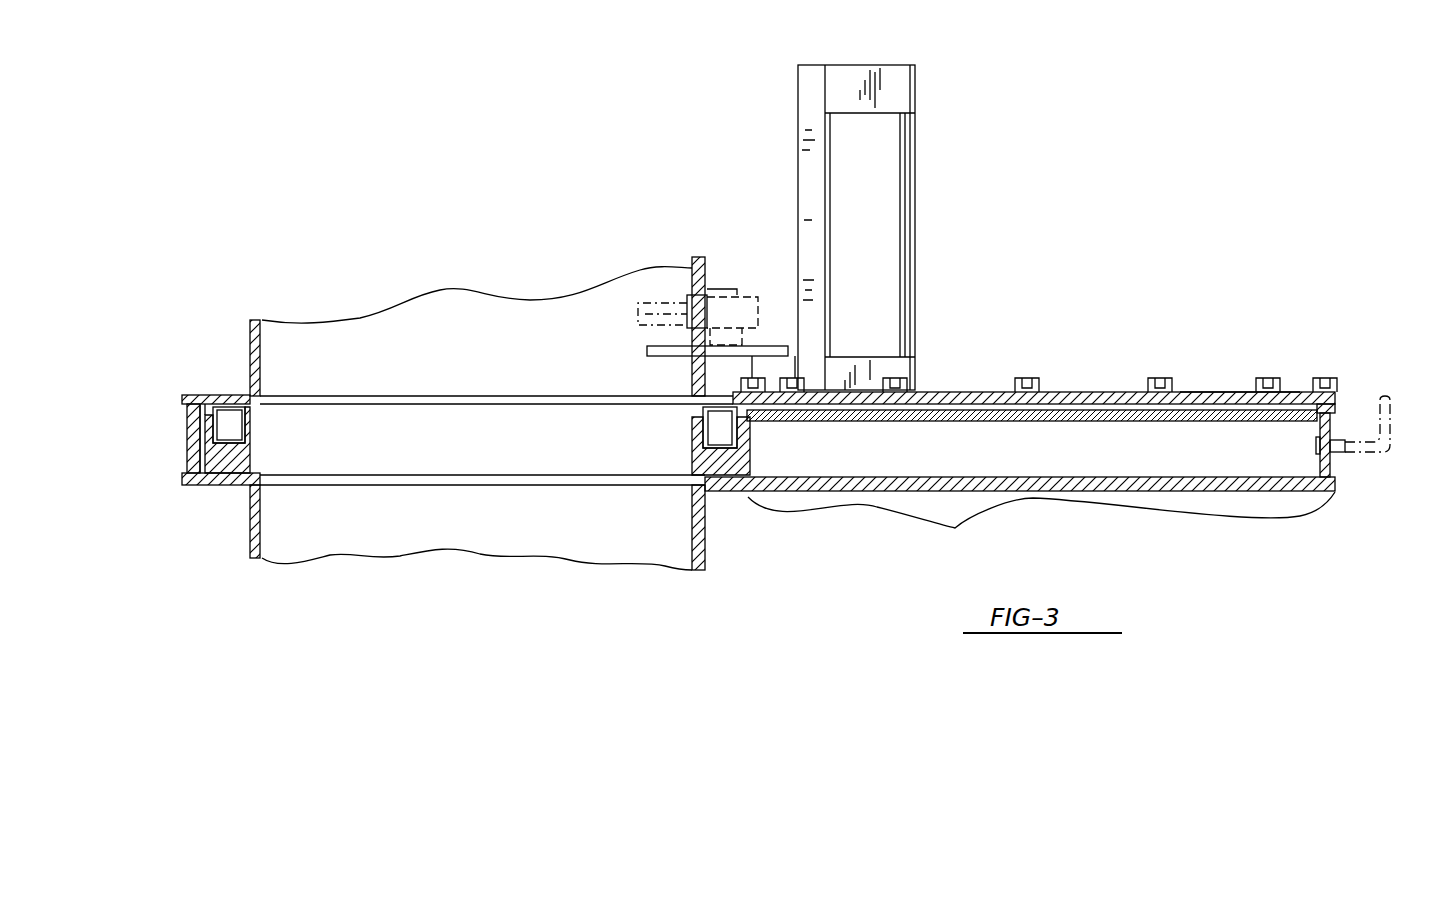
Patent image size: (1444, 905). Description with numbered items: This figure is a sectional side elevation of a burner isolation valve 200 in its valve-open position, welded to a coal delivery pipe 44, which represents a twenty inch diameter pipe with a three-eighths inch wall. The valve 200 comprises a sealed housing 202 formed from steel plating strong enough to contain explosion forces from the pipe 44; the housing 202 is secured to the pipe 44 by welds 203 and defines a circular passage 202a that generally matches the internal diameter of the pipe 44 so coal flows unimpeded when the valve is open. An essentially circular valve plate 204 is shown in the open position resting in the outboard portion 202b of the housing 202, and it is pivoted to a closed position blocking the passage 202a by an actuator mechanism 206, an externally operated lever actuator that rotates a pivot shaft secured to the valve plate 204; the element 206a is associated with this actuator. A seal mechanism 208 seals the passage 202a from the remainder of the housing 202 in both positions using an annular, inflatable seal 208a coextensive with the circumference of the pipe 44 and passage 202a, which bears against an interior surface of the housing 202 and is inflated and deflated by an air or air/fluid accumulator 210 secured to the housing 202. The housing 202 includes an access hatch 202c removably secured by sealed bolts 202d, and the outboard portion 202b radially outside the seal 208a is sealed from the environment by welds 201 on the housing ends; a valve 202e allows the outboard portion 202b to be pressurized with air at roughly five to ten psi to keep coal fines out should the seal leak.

The delivery pipe 44 is at (250, 332).
The burner isolation valve 200 is at (980, 328).
The welds 201 is at (181, 402).
The sealed housing 202 is at (985, 484).
The circular passage 202a is at (493, 400).
The outboard portion 202b is at (798, 531).
The access hatch 202c is at (1205, 393).
The bolts 202d is at (1270, 380).
The valve 202e is at (1340, 455).
The welds 203 is at (248, 388).
The valve plate 204 is at (1076, 412).
The actuator mechanism 206 is at (757, 313).
The bracket arm 206a is at (653, 313).
The seal mechanism 208 is at (210, 458).
The inflatable seal 208a is at (222, 425).
The accumulator 210 is at (916, 183).